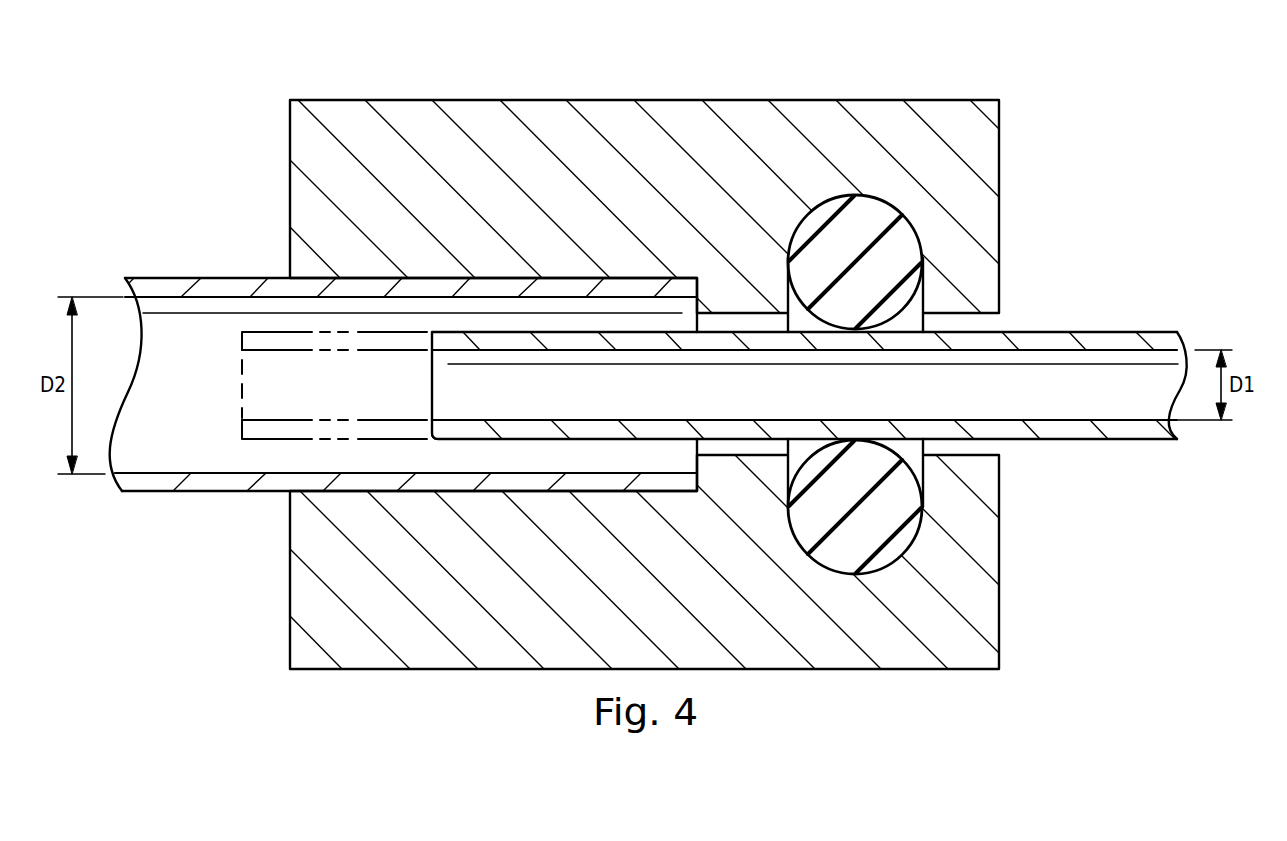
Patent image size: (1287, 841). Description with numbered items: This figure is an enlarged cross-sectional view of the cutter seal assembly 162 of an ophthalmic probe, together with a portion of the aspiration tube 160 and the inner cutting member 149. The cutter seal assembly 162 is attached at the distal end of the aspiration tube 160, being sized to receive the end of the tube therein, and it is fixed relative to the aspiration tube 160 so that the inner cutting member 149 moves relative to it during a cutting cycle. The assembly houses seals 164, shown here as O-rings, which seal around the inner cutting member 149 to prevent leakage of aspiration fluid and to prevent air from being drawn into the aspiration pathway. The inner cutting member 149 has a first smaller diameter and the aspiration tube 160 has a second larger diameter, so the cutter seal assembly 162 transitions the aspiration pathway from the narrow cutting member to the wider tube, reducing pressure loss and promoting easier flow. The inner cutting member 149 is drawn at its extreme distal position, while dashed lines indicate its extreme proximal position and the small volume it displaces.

The inner cutting member 149 is at (1066, 427).
The aspiration tube 160 is at (230, 288).
The cutter seal assembly 162 is at (348, 110).
The seal 164 is at (908, 233).